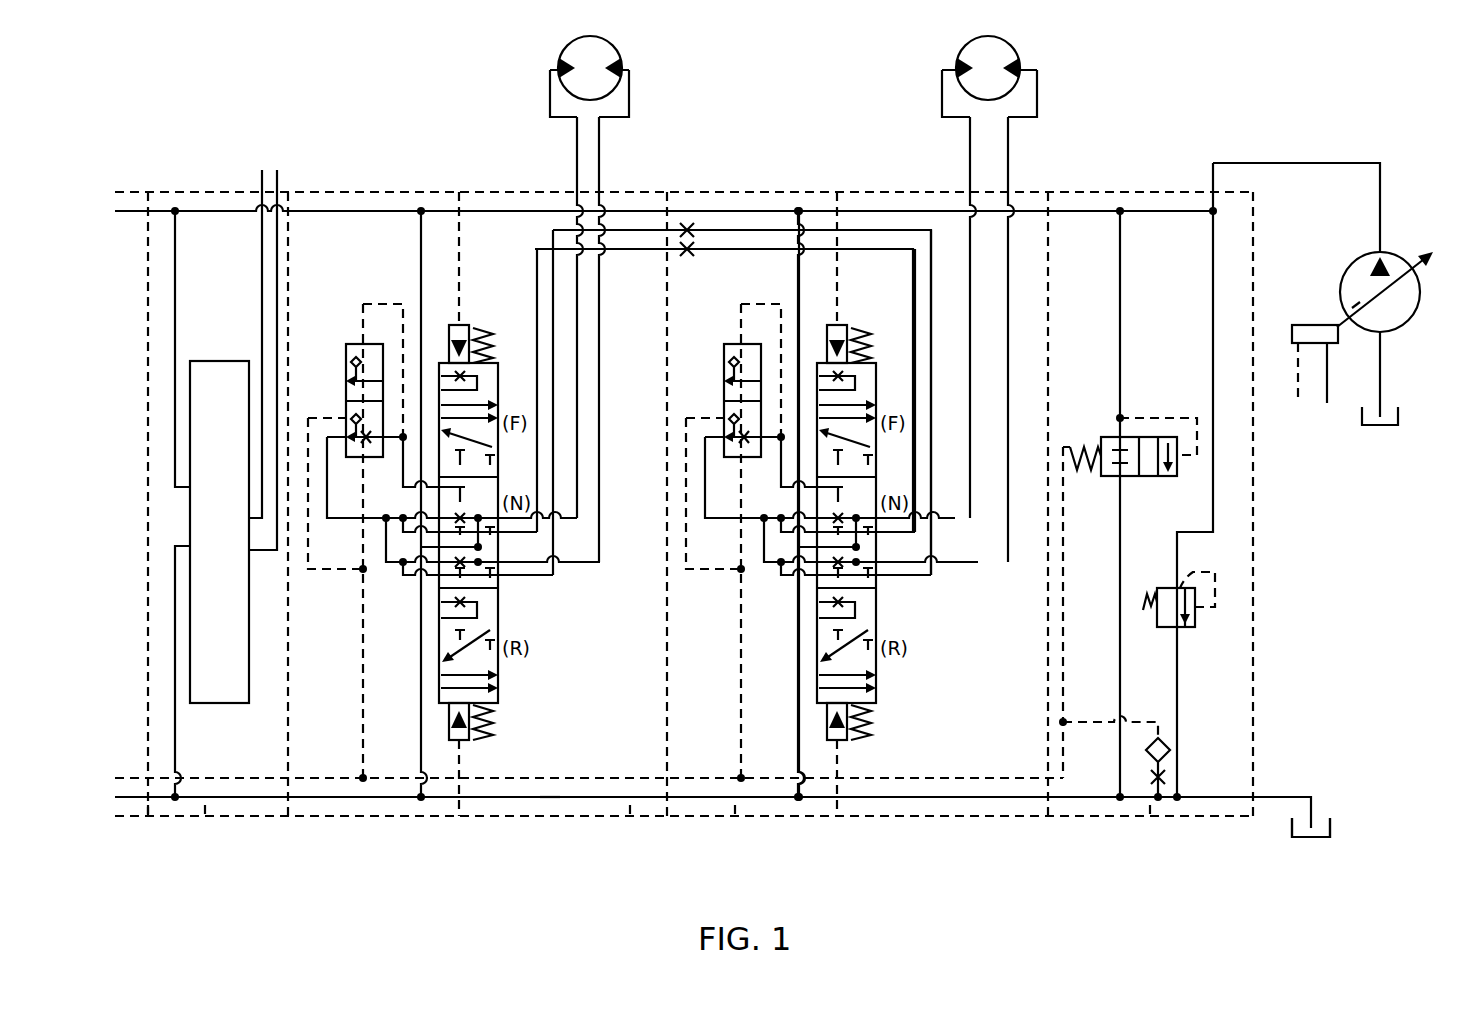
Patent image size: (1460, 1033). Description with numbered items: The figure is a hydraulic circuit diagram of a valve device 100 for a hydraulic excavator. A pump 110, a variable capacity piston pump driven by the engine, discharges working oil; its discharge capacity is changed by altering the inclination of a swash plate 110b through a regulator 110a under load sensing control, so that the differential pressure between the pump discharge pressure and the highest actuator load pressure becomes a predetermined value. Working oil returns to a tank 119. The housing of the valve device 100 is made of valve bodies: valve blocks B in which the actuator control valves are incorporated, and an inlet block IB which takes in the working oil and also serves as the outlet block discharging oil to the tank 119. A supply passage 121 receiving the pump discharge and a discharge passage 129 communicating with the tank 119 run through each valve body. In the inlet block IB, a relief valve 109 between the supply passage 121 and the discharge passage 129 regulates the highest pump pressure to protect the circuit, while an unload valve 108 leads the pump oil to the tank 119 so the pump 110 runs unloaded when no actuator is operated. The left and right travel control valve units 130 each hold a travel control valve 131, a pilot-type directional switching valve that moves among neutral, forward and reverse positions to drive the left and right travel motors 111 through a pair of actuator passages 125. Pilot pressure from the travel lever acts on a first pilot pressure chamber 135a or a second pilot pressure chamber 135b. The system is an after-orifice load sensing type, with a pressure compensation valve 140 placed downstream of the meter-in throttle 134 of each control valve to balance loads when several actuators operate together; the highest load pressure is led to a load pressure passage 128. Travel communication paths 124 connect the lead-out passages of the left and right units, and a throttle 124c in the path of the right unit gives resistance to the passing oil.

The valve device 100 is at (136, 182).
The unload valve 108 is at (1147, 477).
The relief valve 109 is at (1195, 623).
The pump 110 is at (1348, 268).
The regulator 110a is at (1305, 324).
The swash plate 110b is at (1350, 307).
The travel motors 111 is at (556, 62).
The tank 119 is at (1398, 416).
The supply passage 121 is at (1100, 208).
The travel communication path 124 is at (716, 298).
The throttle 124c is at (687, 226).
The actuator passages 125 is at (562, 520).
The load pressure passage 128 is at (548, 786).
The discharge passage 129 is at (1040, 806).
The travel control valve units 130 is at (504, 188).
The travel control valves 131 is at (440, 702).
The meter-in throttle 134 is at (458, 372).
The first pilot pressure chamber 135a is at (462, 323).
The second pilot pressure chamber 135b is at (470, 735).
The pressure compensation valve 140 is at (352, 343).
The valve block B is at (148, 818).
The inlet block IB is at (1150, 818).